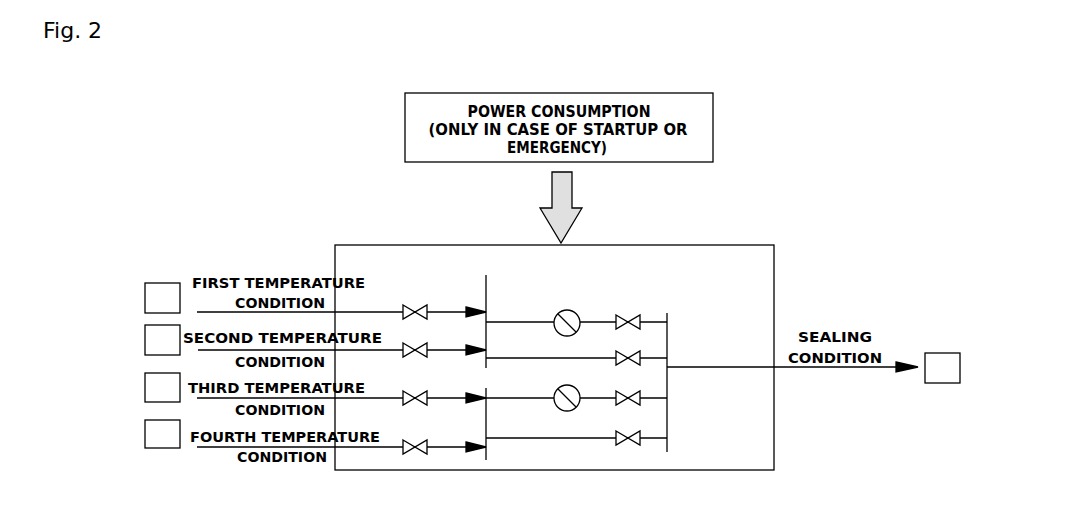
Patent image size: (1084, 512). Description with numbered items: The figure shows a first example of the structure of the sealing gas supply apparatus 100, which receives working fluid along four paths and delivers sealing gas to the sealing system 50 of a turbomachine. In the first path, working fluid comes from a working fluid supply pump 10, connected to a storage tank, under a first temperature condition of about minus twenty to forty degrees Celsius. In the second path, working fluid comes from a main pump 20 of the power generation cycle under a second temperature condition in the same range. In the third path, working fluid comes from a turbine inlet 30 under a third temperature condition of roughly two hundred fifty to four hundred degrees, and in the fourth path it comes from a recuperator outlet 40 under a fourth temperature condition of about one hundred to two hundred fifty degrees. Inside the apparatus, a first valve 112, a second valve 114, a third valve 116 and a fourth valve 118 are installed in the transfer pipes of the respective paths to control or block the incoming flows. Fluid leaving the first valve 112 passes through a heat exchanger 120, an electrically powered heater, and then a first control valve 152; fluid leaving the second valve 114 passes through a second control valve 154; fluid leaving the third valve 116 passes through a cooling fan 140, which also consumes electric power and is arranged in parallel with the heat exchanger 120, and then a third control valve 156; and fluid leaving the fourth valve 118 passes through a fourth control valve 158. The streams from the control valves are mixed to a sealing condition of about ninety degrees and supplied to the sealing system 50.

The working fluid supply pump 10 is at (162, 298).
The main pump 20 is at (162, 340).
The turbine inlet 30 is at (162, 387).
The recuperator outlet 40 is at (162, 434).
The sealing system 50 is at (942, 368).
The sealing gas supply apparatus 100 is at (752, 281).
The first valve 112 is at (414, 300).
The second valve 114 is at (414, 338).
The third valve 116 is at (414, 387).
The fourth valve 118 is at (414, 436).
The heat exchanger 120 is at (565, 312).
The cooling fan 140 is at (565, 388).
The first control valve 152 is at (626, 311).
The second control valve 154 is at (626, 347).
The third control valve 156 is at (626, 387).
The fourth control valve 158 is at (626, 427).